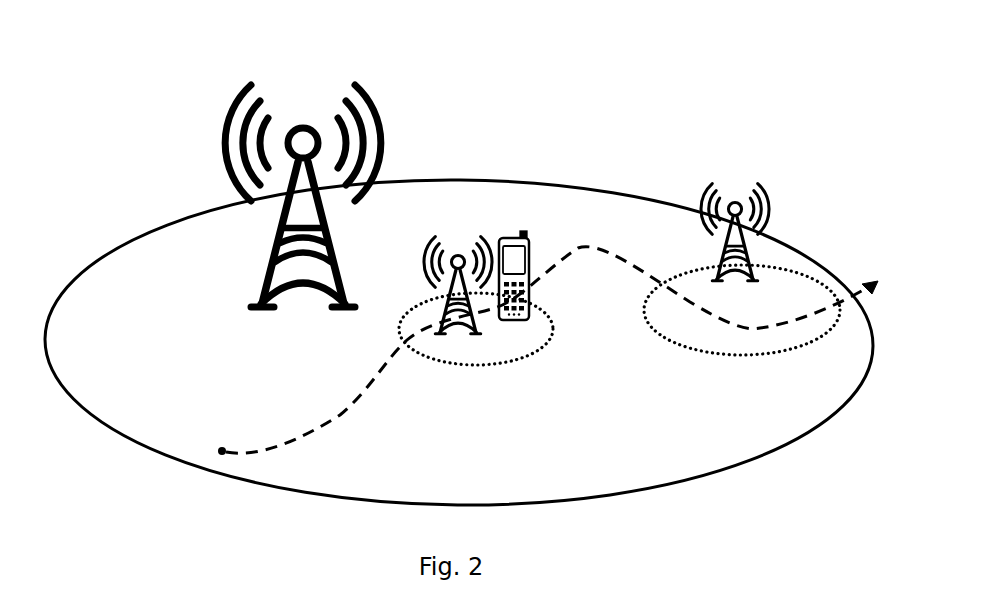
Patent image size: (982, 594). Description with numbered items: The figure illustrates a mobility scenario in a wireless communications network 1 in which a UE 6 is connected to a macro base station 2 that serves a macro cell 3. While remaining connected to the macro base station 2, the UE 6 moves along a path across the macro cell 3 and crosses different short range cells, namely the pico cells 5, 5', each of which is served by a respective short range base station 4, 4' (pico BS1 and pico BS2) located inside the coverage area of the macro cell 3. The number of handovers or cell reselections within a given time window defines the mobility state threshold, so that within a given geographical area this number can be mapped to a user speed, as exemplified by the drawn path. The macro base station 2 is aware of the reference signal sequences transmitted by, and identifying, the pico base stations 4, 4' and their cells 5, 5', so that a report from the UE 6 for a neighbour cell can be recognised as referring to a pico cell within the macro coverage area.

The wireless communications network 1 is at (594, 40).
The macro base station 2 is at (217, 75).
The macro cell 3 is at (94, 301).
The short range base station 4 is at (469, 229).
The short range base station 4' is at (756, 216).
The short range cell 5 is at (476, 329).
The short range cell 5' is at (742, 310).
The UE 6 is at (526, 232).